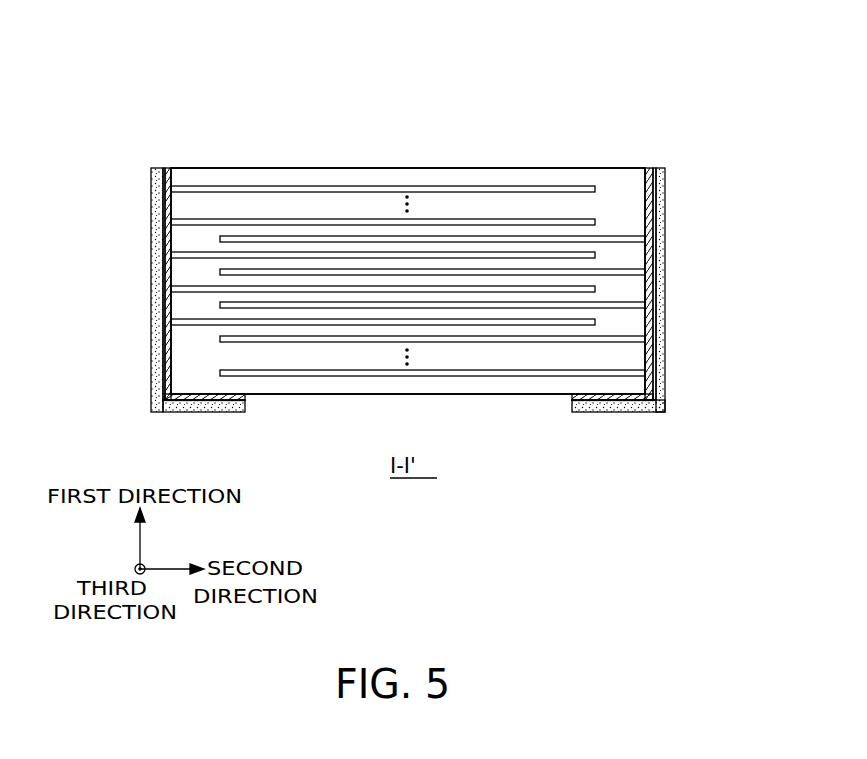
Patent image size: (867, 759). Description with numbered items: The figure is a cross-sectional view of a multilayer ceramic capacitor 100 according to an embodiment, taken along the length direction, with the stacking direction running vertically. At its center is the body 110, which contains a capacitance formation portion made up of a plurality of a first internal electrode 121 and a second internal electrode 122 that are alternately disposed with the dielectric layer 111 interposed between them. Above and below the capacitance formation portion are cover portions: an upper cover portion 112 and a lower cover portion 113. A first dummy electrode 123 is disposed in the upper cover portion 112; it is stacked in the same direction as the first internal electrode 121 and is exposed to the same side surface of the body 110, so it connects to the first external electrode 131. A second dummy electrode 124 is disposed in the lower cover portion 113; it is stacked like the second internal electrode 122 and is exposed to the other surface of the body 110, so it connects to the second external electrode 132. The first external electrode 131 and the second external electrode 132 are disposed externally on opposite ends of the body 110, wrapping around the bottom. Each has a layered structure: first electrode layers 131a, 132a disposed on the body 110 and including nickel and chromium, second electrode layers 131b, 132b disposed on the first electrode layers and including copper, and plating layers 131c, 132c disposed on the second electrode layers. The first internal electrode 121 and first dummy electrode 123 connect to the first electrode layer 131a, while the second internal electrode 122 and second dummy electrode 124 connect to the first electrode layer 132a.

The multilayer ceramic capacitor 100 is at (150, 66).
The body 110 is at (575, 168).
The dielectric layer 111 is at (323, 228).
The upper cover portion 112 is at (520, 208).
The lower cover portion 113 is at (508, 377).
The first internal electrode 121 is at (393, 219).
The second internal electrode 122 is at (458, 236).
The first dummy electrode 123 is at (246, 186).
The second dummy electrode 124 is at (290, 376).
The first external electrode 131 is at (131, 290).
The first electrode layer 131a is at (168, 270).
The second electrode layer 131b is at (162, 245).
The plating layer 131c is at (157, 218).
The second external electrode 132 is at (690, 290).
The first electrode layer 132a is at (650, 272).
The second electrode layer 132b is at (656, 246).
The plating layer 132c is at (660, 219).